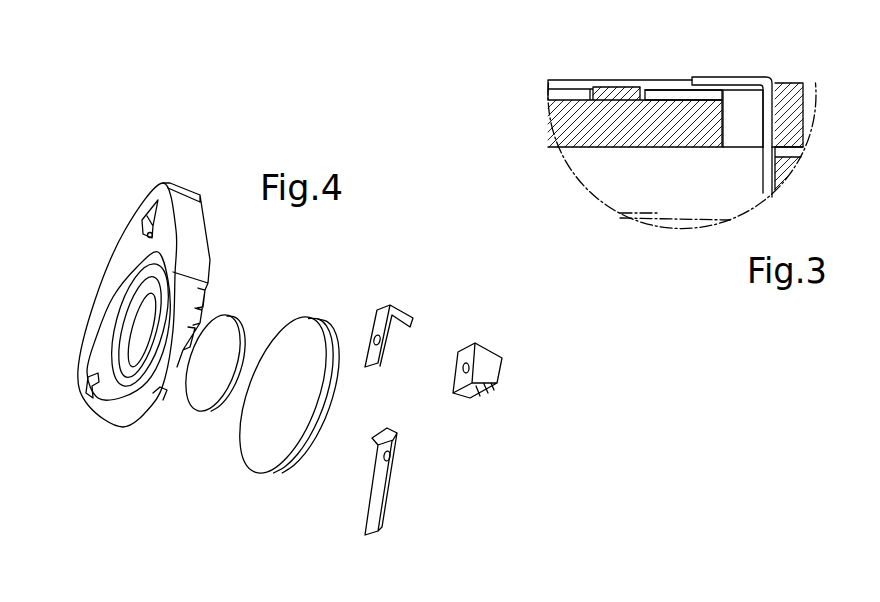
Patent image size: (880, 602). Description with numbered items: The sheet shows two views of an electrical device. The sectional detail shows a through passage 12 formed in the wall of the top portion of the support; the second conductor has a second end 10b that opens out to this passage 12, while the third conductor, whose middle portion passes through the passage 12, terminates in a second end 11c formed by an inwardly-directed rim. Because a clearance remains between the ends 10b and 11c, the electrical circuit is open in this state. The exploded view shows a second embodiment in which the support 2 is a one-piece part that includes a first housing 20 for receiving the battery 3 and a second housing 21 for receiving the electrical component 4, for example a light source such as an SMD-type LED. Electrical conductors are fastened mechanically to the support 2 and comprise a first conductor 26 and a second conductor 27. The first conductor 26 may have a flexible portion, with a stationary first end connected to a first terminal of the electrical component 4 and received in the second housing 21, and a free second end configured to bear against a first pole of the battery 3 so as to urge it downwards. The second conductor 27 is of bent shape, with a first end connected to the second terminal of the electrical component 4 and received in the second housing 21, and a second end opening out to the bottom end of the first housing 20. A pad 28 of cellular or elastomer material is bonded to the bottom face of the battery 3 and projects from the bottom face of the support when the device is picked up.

In FIG. 4, the support 2 is at (106, 283).
In FIG. 4, the battery 3 is at (296, 326).
In FIG. 4, the electrical component 4 is at (487, 347).
In FIG. 4, the first housing 20 is at (134, 344).
In FIG. 4, the second housing 21 is at (142, 229).
In FIG. 4, the first conductor 26 is at (377, 497).
In FIG. 4, the second conductor 27 is at (380, 307).
In FIG. 4, the pad 28 is at (213, 404).
In FIG. 3, the second end 10b is at (666, 97).
In FIG. 3, the second end 11c is at (734, 82).
In FIG. 3, the through passage 12 is at (744, 130).